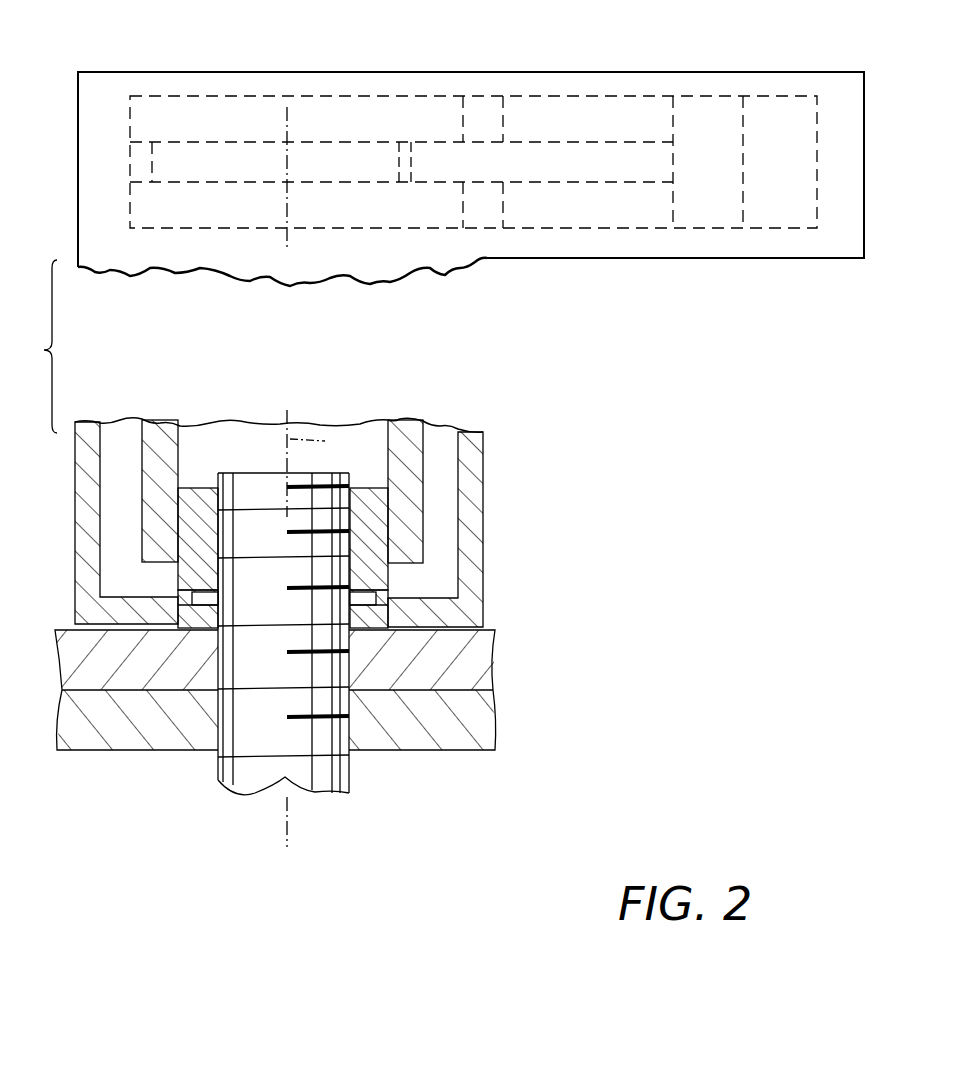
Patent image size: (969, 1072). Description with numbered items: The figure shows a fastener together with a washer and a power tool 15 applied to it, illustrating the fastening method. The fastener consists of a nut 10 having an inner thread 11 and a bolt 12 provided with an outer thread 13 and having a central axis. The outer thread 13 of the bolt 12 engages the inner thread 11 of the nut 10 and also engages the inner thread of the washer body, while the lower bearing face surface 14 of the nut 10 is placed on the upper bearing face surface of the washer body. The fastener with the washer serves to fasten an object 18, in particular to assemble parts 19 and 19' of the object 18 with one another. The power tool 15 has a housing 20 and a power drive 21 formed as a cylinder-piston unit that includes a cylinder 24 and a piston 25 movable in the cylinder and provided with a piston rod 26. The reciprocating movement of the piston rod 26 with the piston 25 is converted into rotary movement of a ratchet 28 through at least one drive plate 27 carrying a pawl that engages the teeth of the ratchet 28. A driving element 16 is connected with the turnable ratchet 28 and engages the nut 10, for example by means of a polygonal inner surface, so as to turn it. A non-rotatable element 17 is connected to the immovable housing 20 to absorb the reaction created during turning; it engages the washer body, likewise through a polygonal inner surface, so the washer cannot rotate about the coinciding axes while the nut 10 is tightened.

The nut 10 is at (200, 487).
The inner thread 11 is at (200, 493).
The bolt 12 is at (332, 793).
The outer thread 13 is at (242, 500).
The lower bearing face surface 14 is at (187, 592).
The power tool 15 is at (304, 490).
The driving element 16 is at (164, 432).
The non-rotatable element 17 is at (74, 425).
The object 18 is at (167, 783).
The part of the object 19 is at (275, 722).
The part of the object 19' is at (38, 638).
The housing 20 is at (452, 63).
The power drive 21 is at (698, 318).
The cylinder 24 is at (792, 107).
The piston 25 is at (703, 107).
The piston rod 26 is at (575, 157).
The drive plate 27 is at (323, 110).
The ratchet 28 is at (200, 153).